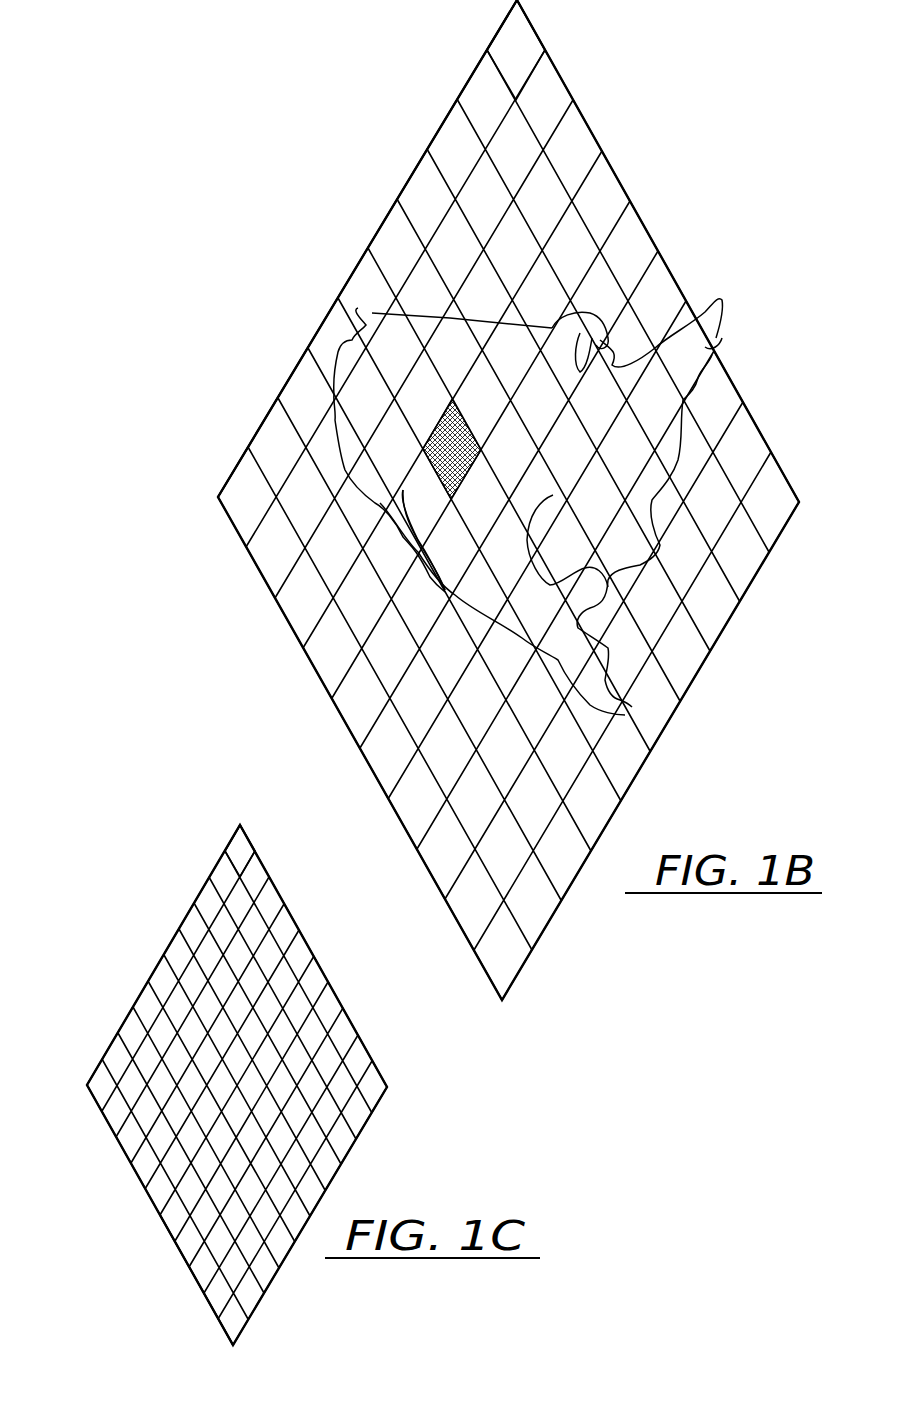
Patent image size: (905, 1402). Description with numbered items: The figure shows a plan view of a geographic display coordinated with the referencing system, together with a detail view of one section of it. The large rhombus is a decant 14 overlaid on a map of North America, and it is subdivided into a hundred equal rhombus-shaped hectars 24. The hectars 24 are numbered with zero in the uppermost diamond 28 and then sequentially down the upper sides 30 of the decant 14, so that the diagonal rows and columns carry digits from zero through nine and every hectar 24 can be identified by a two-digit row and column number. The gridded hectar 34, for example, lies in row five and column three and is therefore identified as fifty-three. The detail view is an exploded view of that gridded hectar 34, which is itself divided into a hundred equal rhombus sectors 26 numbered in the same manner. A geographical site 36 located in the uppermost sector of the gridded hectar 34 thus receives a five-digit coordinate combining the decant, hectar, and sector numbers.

In FIG. 1B, the decant 14 is at (642, 165).
In FIG. 1B, the uppermost diamond 28 is at (530, 25).
In FIG. 1B, the upper side 30 is at (382, 225).
In FIG. 1B, the gridded hectar 34 is at (481, 452).
In FIG. 1C, the gridded hectar 34 is at (330, 962).
In FIG. 1B, the hectar 24 is at (743, 573).
In FIG. 1C, the geographical site 36 is at (238, 830).
In FIG. 1C, the sector 26 is at (195, 1268).